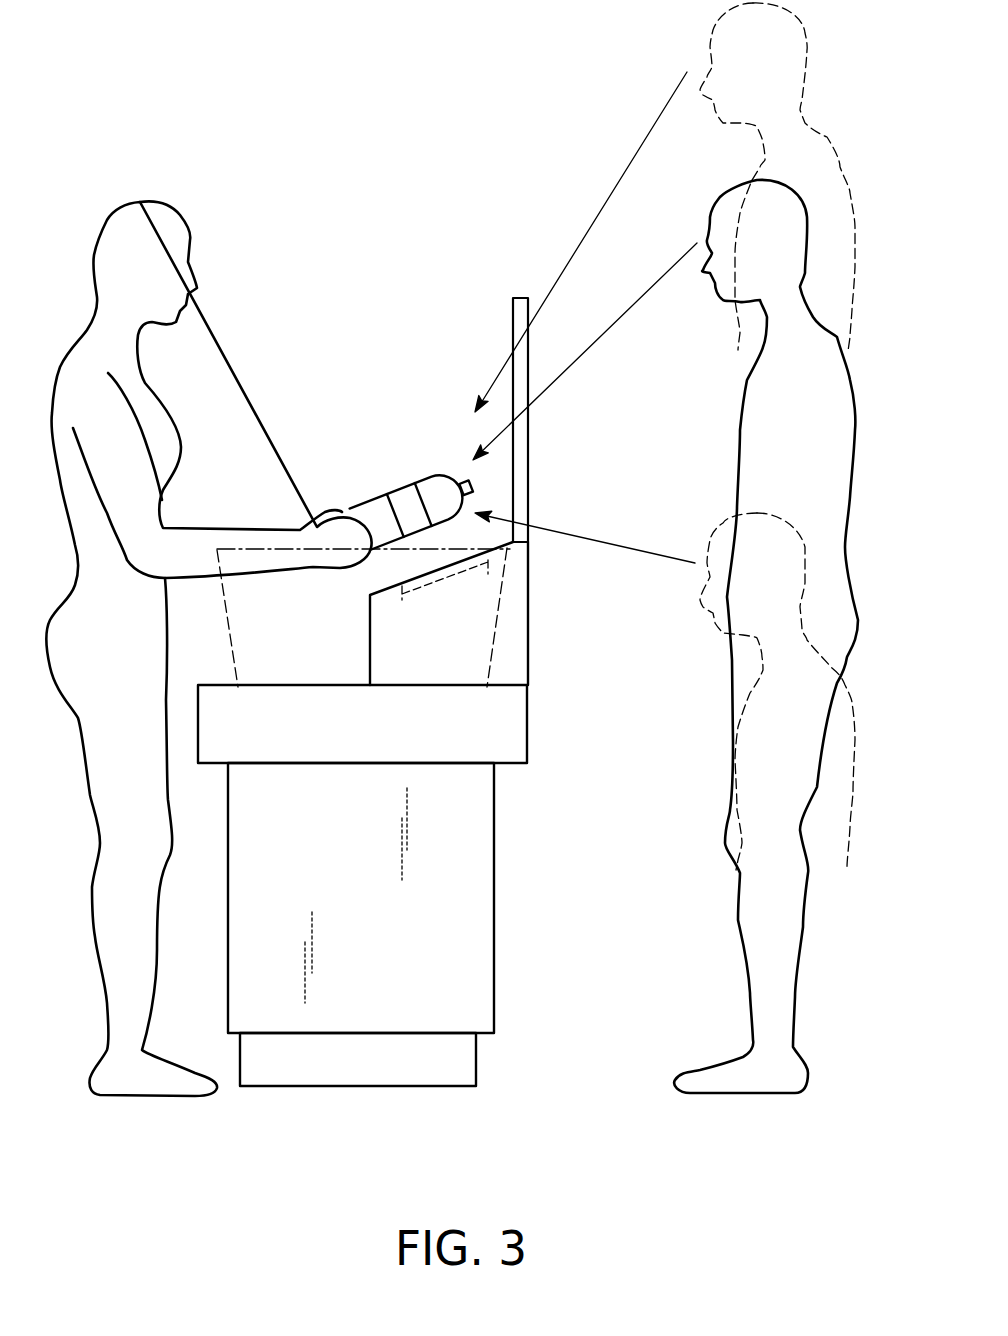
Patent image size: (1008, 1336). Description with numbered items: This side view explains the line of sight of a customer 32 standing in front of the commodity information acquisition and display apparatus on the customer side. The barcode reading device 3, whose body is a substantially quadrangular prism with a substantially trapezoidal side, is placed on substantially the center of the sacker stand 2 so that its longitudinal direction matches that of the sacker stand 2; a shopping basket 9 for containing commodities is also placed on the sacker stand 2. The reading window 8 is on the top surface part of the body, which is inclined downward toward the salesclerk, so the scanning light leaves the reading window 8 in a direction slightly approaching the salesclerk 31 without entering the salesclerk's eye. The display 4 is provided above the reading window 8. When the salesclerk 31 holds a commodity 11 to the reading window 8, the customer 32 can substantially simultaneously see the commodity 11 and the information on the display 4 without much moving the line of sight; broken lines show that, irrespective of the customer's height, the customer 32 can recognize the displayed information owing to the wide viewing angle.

The sacker stand 2 is at (500, 733).
The barcode reading device 3 is at (528, 630).
The display 4 is at (517, 298).
The reading window 8 is at (455, 575).
The shopping basket 9 is at (487, 668).
The commodity 11 is at (401, 492).
The salesclerk 31 is at (112, 212).
The customer 32 is at (827, 137).